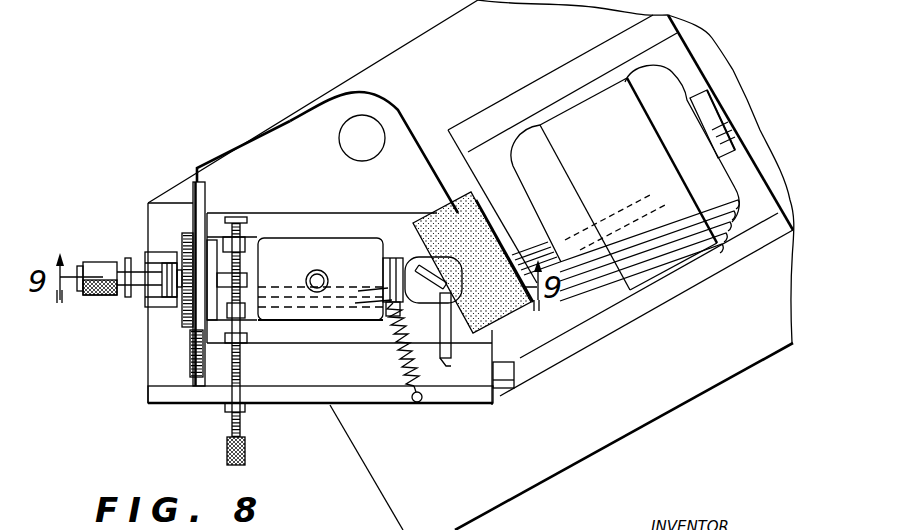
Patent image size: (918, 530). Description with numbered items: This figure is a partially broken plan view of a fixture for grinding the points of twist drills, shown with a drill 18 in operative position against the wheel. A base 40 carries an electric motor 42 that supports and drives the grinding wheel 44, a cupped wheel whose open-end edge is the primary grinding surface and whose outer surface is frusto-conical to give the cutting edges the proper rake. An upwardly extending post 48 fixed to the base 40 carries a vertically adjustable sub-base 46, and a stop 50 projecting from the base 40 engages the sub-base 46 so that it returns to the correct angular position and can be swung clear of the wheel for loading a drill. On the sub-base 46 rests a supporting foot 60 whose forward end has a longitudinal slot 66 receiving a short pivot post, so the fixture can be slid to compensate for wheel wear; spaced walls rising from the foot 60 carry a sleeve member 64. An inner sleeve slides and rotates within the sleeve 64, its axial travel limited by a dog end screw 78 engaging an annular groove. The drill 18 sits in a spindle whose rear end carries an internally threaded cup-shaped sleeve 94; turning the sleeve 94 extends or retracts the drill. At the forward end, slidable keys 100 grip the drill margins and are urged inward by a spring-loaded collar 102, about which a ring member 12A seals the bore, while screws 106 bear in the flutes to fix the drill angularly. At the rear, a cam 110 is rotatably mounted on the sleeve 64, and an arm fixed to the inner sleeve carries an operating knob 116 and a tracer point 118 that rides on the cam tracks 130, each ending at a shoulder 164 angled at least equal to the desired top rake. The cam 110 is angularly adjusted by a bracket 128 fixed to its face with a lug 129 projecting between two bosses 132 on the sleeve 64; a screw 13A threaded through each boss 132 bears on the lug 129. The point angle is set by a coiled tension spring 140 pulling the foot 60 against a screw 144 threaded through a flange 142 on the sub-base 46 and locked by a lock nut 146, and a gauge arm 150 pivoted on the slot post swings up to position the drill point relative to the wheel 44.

The base 40 is at (434, 26).
The electric motor 42 is at (622, 175).
The grinding wheel 44 is at (440, 198).
The sub-base 46 is at (280, 130).
The post 48 is at (380, 121).
The stop 50 is at (514, 386).
The supporting foot 60 is at (338, 215).
The sleeve member 64 is at (352, 247).
The slot 66 is at (452, 350).
The dog end screw 78 is at (326, 262).
The cup-shaped sleeve 94 is at (97, 296).
The keys 100 is at (357, 302).
The collar 102 is at (357, 290).
The screws 106 is at (418, 270).
The cam member 110 is at (197, 378).
The operating knob 116 is at (138, 266).
The tracer point 118 is at (183, 268).
The bracket 128 is at (205, 240).
The lug 129 is at (248, 281).
The cam tracks 130 is at (148, 203).
The bosses 132 is at (247, 244).
The screw 13A is at (247, 217).
The ring member 12A is at (383, 271).
The coiled spring 140 is at (420, 399).
The flange 142 is at (370, 404).
The screw 144 is at (228, 438).
The lock nut 146 is at (245, 410).
The gauge arm 150 is at (447, 366).
The shoulder 164 is at (186, 299).
The drill 18 is at (433, 220).